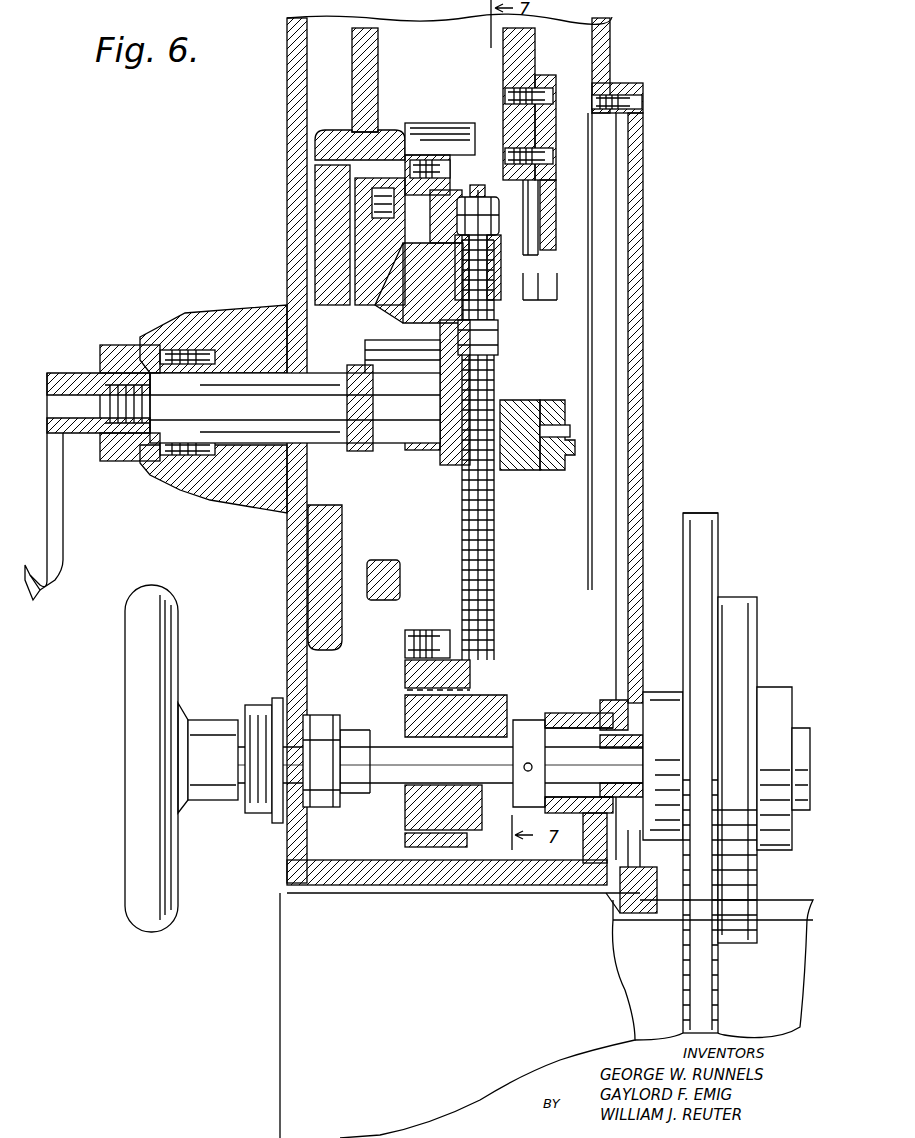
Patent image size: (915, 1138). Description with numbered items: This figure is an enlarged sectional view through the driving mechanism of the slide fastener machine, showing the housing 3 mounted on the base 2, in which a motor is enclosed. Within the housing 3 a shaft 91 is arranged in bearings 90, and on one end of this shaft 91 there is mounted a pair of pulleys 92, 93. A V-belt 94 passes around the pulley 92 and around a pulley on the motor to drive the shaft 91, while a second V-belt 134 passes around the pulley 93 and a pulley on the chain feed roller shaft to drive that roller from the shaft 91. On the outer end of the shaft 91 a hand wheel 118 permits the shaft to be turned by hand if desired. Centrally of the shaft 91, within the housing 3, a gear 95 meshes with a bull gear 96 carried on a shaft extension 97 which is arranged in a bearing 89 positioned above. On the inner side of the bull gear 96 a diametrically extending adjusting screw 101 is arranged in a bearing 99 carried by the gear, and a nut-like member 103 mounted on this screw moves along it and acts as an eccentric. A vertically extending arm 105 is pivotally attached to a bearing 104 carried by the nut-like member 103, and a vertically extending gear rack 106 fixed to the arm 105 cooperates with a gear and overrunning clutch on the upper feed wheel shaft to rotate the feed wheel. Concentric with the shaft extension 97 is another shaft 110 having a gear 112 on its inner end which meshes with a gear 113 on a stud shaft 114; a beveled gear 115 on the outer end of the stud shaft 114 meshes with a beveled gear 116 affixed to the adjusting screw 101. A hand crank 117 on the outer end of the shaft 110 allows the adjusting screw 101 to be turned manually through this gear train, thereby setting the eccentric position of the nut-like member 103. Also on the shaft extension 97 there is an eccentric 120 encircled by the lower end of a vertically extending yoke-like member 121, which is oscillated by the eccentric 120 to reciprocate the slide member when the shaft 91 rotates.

The base 2 is at (288, 1053).
The housing 3 is at (286, 565).
The bearing 89 is at (240, 305).
The bearings 90 is at (322, 725).
The shaft 91 is at (388, 770).
The pulley 92 is at (720, 540).
The pulley 93 is at (758, 632).
The V-belt 94 is at (720, 540).
The gear 95 is at (440, 830).
The bull gear 96 is at (408, 670).
The shaft extension 97 is at (212, 490).
The bearing 99 is at (503, 265).
The adjusting screw 101 is at (488, 550).
The nut-like member 103 is at (512, 463).
The bearing 104 is at (538, 460).
The arm 105 is at (530, 331).
The gear rack 106 is at (525, 48).
The shaft 110 is at (172, 483).
The gear 112 is at (437, 406).
The gear 113 is at (443, 350).
The stud shaft 114 is at (365, 365).
The beveled gear 115 is at (500, 352).
The beveled gear 116 is at (497, 313).
The hand crank 117 is at (58, 560).
The hand wheel 118 is at (137, 918).
The eccentric 120 is at (365, 587).
The yoke-like member 121 is at (322, 140).
The V-belt 134 is at (732, 663).